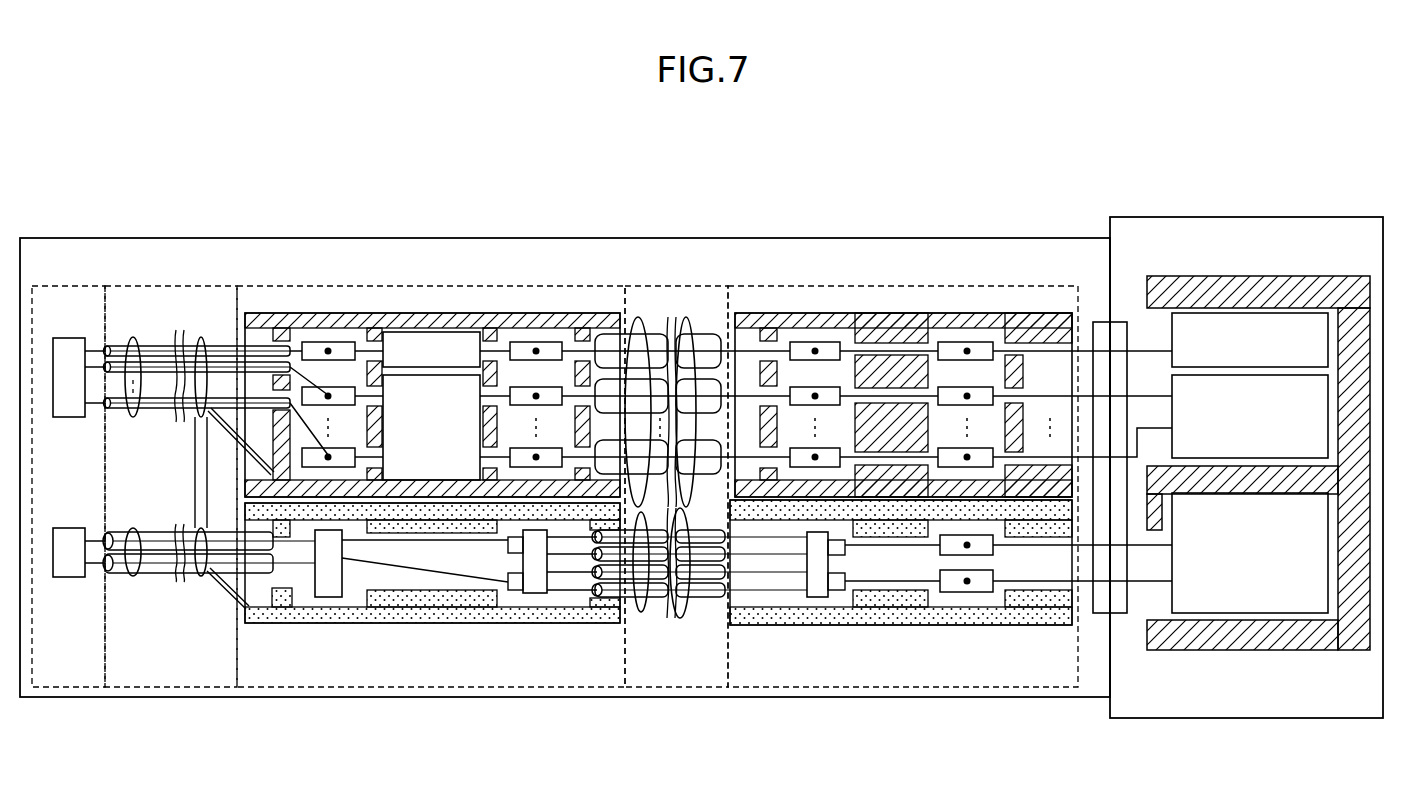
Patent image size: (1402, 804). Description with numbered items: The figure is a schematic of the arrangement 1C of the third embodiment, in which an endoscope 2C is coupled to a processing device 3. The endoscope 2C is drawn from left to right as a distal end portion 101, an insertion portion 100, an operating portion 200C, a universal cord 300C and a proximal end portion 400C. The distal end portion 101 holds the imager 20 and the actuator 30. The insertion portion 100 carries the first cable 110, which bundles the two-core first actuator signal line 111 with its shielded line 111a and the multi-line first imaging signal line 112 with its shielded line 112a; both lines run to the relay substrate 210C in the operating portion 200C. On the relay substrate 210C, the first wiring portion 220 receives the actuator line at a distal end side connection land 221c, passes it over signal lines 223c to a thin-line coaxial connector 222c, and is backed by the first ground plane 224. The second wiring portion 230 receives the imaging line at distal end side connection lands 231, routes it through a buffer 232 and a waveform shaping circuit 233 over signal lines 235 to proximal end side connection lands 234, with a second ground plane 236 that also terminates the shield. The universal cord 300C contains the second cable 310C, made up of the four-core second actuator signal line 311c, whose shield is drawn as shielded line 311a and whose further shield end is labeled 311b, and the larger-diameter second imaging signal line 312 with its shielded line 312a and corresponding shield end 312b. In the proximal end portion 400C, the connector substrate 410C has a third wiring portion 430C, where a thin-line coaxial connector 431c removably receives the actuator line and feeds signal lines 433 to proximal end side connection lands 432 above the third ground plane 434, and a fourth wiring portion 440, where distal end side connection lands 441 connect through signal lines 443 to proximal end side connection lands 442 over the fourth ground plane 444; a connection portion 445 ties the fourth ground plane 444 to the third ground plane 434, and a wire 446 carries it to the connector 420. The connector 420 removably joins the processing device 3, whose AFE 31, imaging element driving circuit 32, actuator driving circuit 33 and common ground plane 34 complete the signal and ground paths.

The endoscope system 1C is at (1219, 147).
The endoscope 2C is at (880, 238).
The processing device 3 is at (1232, 276).
The analog front end 31 is at (1192, 313).
The imaging element driving circuit 32 is at (1316, 375).
The actuator driving circuit 33 is at (1300, 613).
The common ground plane 34 is at (1240, 650).
The imager 20 is at (70, 338).
The actuator 30 is at (70, 528).
The insertion portion 100 is at (168, 286).
The distal end portion 101 is at (73, 286).
The first cable 110 is at (203, 337).
The first actuator signal line 111 is at (144, 530).
The shielded line 111a is at (228, 592).
The first imaging signal line 112 is at (144, 345).
The shielded line 112a is at (226, 445).
The operating portion 200C is at (291, 303).
The relay substrate 210C is at (261, 636).
The first wiring portion 220 is at (362, 612).
The distal end side connection land 221c is at (313, 597).
The thin-line coaxial connector 222c is at (504, 562).
The signal lines 223c is at (404, 570).
The first ground plane 224 is at (330, 612).
The second wiring portion 230 is at (422, 313).
The distal end side connection lands 231 is at (322, 342).
The buffer 232 is at (456, 375).
The waveform shaping circuit 233 is at (398, 332).
The proximal end side connection lands 234 is at (513, 342).
The signal lines 235 is at (372, 340).
The second ground plane 236 is at (262, 322).
The universal cord 300C is at (680, 300).
The second cable 310C is at (715, 330).
The shielded line 311a is at (630, 612).
The actuator cable 311b is at (702, 612).
The second actuator signal line 311c is at (662, 612).
The second imaging signal line 312 is at (646, 330).
The shielded line 312a is at (600, 602).
The shield end 312b is at (695, 595).
The proximal end portion 400C is at (975, 303).
The connector substrate 410C is at (1051, 315).
The connector 420 is at (1115, 322).
The third wiring portion 430C is at (1043, 627).
The thin-line coaxial connector 431c is at (818, 600).
The proximal end side connection lands 432 is at (1000, 540).
The signal lines 433 is at (878, 540).
The third ground plane 434 is at (982, 625).
The fourth wiring portion 440 is at (857, 313).
The distal end side connection lands 441 is at (815, 340).
The proximal end side connection lands 442 is at (976, 340).
The signal lines 443 is at (934, 340).
The fourth ground plane 444 is at (768, 330).
The connection portion 445 is at (1084, 330).
The wire 446 is at (1152, 560).